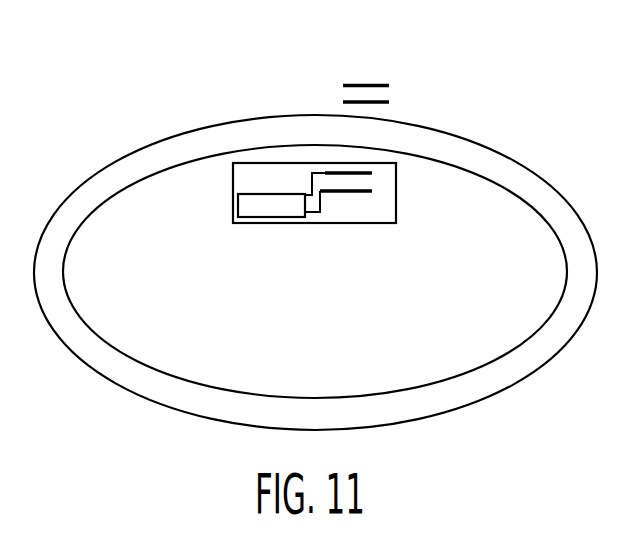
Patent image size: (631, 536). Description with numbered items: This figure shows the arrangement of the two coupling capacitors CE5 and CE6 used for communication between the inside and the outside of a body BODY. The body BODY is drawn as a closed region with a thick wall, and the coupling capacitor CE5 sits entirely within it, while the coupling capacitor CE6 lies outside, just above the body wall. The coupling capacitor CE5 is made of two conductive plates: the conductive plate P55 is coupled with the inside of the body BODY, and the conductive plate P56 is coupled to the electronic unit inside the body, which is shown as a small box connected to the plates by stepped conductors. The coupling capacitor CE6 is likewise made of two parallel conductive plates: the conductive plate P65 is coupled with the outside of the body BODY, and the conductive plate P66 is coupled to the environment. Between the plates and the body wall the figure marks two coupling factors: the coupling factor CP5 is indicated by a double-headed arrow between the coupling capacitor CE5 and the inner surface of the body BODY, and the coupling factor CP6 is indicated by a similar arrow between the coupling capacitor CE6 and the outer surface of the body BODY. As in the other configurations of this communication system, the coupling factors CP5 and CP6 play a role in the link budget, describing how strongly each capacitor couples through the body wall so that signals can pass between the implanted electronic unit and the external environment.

The body BODY is at (315, 272).
The coupling capacitor CE6 is at (412, 59).
The conductive plate P66 is at (383, 80).
The conductive plate P65 is at (396, 105).
The coupling factor CP6 is at (388, 70).
The coupling factor CP5 is at (350, 182).
The coupling capacitor CE5 is at (350, 202).
The conductive plate P55 is at (380, 173).
The conductive plate P56 is at (380, 193).